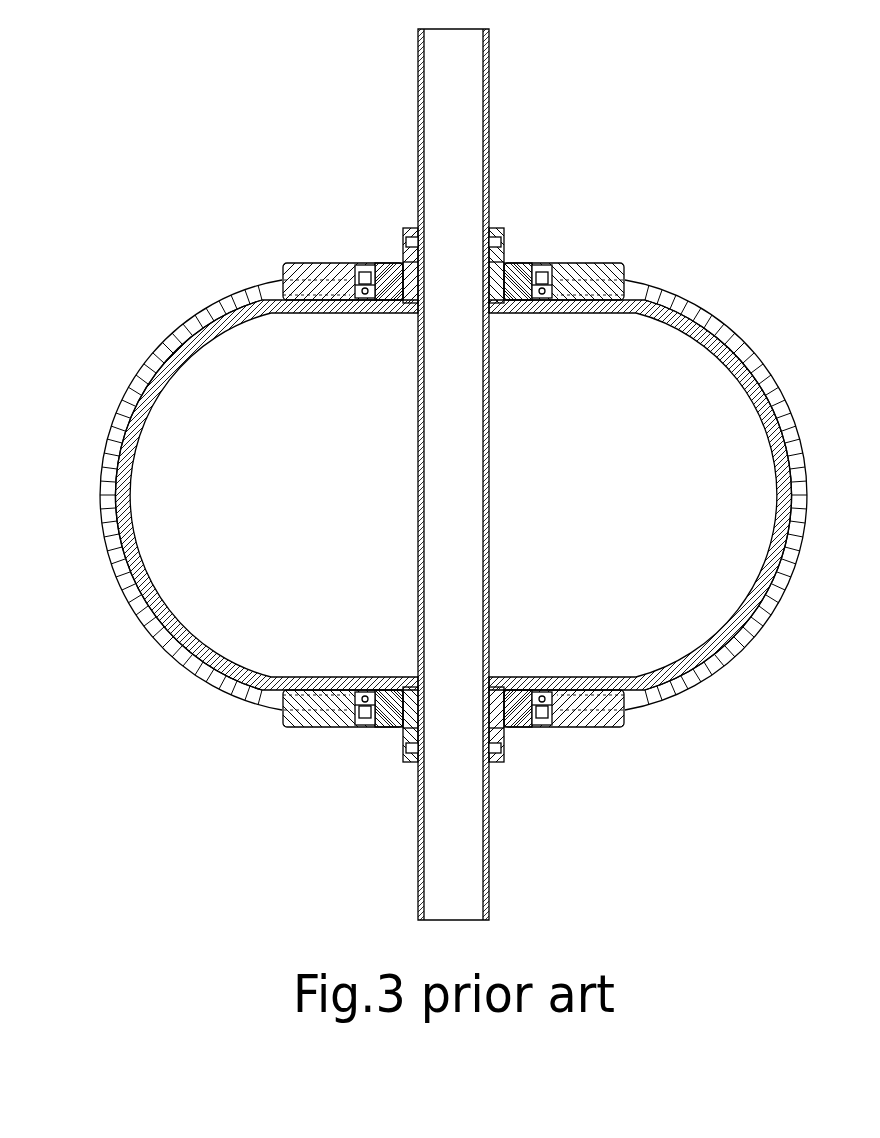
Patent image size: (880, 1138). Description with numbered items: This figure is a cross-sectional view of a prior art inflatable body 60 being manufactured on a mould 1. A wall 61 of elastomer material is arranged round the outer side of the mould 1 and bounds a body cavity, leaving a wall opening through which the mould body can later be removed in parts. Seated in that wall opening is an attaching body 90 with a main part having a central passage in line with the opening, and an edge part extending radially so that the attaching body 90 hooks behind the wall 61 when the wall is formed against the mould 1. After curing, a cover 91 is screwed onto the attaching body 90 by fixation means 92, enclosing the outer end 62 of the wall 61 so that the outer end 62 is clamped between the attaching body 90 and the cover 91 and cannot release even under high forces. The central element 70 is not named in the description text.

The mould 1 is at (150, 370).
The inflatable body 60 is at (100, 512).
The wall 61 is at (195, 328).
The outer end 62 is at (282, 280).
The shaft 70 is at (418, 162).
The attaching body 90 is at (635, 290).
The cover 91 is at (525, 263).
The fixation means 92 is at (568, 265).